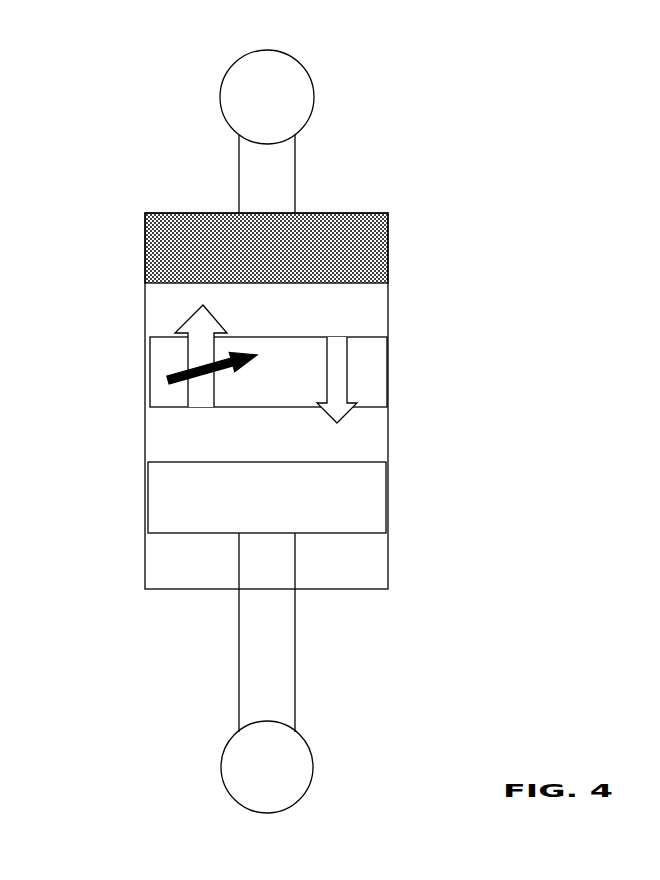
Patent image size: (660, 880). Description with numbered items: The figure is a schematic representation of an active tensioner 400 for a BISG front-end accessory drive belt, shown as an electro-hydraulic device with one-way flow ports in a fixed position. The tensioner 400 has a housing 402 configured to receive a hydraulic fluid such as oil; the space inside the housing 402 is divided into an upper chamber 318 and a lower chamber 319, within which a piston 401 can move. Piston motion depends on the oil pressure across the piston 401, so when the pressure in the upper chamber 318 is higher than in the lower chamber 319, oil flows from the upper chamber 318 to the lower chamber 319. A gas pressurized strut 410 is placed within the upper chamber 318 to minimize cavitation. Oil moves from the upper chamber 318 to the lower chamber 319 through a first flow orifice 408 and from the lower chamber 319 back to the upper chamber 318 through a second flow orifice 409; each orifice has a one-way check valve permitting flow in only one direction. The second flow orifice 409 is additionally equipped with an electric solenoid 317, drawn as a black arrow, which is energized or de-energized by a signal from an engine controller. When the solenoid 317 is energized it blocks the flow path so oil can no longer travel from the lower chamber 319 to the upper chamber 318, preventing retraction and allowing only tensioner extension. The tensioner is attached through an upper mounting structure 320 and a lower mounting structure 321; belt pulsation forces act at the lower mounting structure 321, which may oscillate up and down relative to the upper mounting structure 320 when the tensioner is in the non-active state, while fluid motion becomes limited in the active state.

The active tensioner 400 is at (269, 417).
The upper mounting structure 320 is at (288, 91).
The lower mounting structure 321 is at (287, 755).
The housing 402 is at (198, 215).
The gas pressurized strut 410 is at (368, 243).
The upper chamber 318 is at (266, 310).
The lower chamber 319 is at (266, 434).
The first flow orifice 408 is at (338, 358).
The second flow orifice 409 is at (198, 323).
The electric solenoid 317 is at (183, 372).
The piston 401 is at (367, 497).